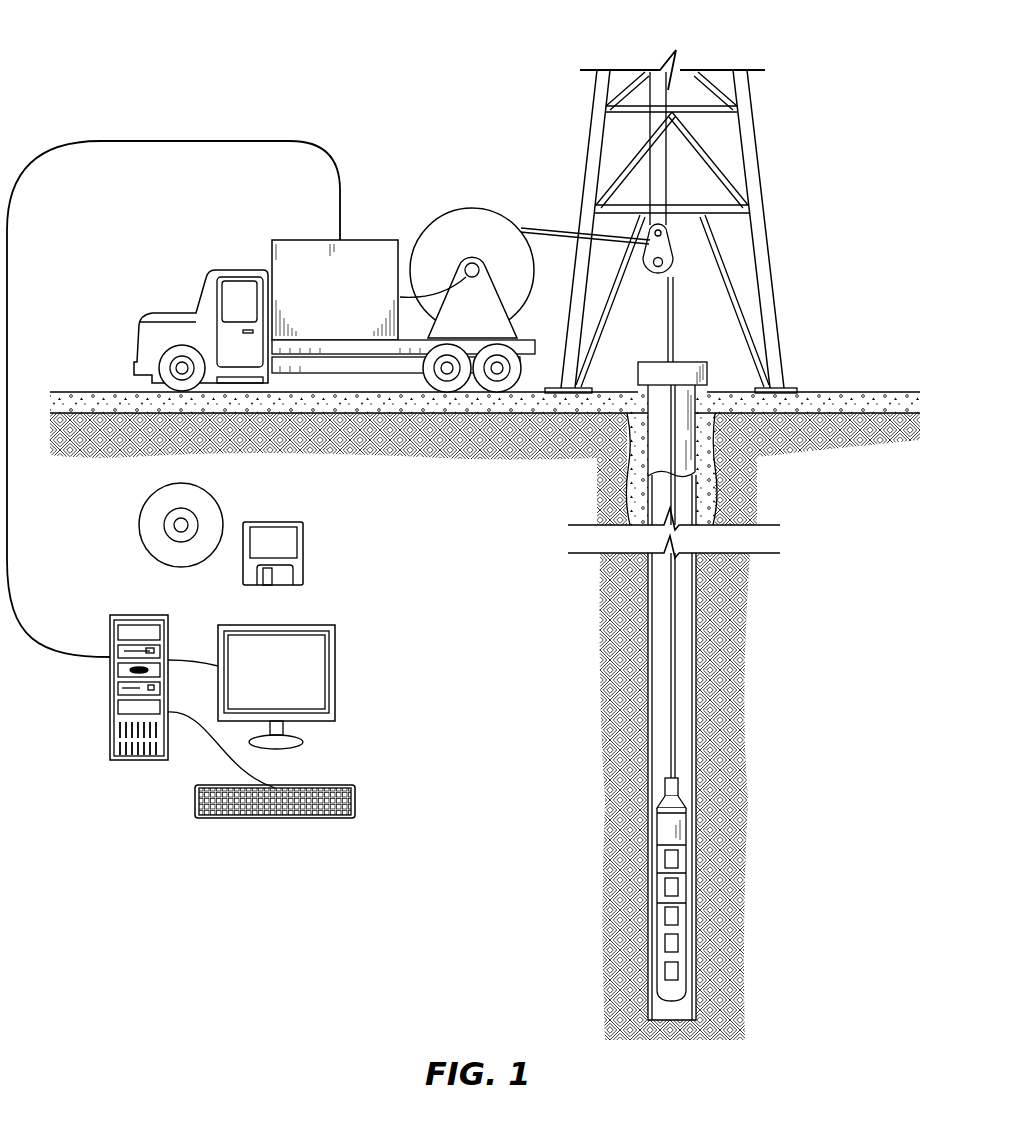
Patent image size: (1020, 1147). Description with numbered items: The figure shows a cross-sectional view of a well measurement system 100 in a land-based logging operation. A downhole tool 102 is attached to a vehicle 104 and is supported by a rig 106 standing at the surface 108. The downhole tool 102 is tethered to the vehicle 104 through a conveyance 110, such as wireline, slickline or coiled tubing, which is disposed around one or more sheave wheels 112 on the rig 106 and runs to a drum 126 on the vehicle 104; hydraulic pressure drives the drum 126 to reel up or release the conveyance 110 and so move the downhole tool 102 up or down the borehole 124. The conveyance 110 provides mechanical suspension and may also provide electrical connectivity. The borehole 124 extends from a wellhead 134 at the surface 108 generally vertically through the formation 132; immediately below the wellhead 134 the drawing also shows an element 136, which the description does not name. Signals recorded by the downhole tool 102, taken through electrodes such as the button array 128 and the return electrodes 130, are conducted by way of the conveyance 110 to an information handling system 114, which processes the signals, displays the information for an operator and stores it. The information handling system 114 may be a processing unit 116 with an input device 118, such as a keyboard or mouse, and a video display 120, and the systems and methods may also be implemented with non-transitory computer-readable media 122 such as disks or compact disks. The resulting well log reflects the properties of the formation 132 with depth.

The well measurement system 100 is at (137, 60).
The downhole tool 102 is at (632, 858).
The vehicle 104 is at (339, 286).
The rig 106 is at (771, 222).
The surface 108 is at (833, 392).
The conveyance 110 is at (667, 647).
The sheave wheels 112 is at (657, 277).
The information handling system 114 is at (244, 684).
The processing unit 116 is at (148, 615).
The input device 118 is at (355, 800).
The video display 120 is at (283, 625).
The non-transitory computer-readable media 122 is at (273, 522).
The borehole 124 is at (700, 515).
The drum 126 is at (470, 210).
The button array 128 is at (741, 889).
The return electrodes 130 is at (680, 887).
The formation 132 is at (868, 640).
The wellhead 134 is at (713, 372).
The casing 136 is at (655, 452).